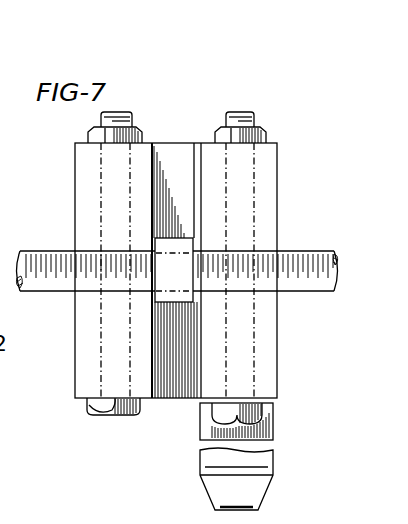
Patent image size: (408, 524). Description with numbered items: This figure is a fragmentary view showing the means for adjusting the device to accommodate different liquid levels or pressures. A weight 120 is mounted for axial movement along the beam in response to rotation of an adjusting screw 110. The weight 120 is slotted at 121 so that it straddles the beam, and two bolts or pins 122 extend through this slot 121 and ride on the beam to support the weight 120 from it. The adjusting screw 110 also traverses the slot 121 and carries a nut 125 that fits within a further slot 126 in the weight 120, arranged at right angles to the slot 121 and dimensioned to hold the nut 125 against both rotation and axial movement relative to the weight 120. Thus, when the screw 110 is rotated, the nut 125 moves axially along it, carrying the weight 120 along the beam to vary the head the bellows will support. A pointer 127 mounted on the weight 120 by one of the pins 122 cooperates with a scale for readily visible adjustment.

The adjusting screw 110 is at (58, 249).
The weight 120 is at (264, 157).
The slot 121 is at (247, 295).
The bolts or pins 122 is at (93, 417).
The nut 125 is at (178, 243).
The further slot 126 is at (155, 150).
The pointer 127 is at (268, 430).